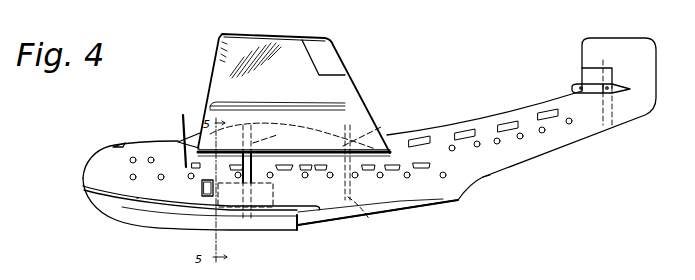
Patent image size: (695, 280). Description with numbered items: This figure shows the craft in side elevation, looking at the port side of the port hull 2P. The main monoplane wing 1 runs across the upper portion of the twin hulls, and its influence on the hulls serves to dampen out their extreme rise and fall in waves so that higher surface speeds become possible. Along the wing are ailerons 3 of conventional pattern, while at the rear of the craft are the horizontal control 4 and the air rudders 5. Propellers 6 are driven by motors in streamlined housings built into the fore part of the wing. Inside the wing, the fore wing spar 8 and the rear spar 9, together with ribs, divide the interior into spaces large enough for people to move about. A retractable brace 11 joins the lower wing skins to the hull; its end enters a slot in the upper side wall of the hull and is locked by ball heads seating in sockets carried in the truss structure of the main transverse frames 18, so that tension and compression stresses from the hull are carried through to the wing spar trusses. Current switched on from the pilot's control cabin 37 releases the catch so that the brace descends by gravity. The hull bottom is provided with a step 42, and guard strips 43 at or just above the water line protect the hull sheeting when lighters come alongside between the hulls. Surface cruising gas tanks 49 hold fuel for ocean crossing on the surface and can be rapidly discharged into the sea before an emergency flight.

The main monoplane wing 1 is at (217, 69).
The ailerons 3 is at (327, 62).
The horizontal control 4 is at (575, 85).
The air rudders 5 is at (628, 48).
The propellers 6 is at (184, 125).
The fore wing spar 8 is at (254, 166).
The rear spar 9 is at (377, 130).
The retractable brace 11 is at (351, 153).
The main transverse frames 18 is at (258, 213).
The pilot's control cabin 37 is at (123, 145).
The step 42 is at (310, 222).
The guard strips 43 is at (137, 198).
The surface cruising gas tanks 49 is at (275, 192).
The port hull 2P is at (482, 176).